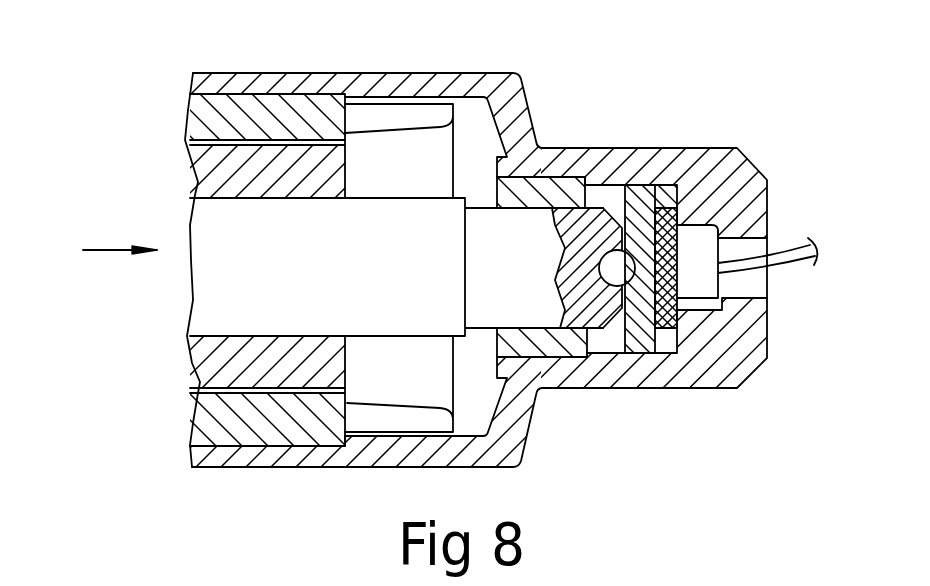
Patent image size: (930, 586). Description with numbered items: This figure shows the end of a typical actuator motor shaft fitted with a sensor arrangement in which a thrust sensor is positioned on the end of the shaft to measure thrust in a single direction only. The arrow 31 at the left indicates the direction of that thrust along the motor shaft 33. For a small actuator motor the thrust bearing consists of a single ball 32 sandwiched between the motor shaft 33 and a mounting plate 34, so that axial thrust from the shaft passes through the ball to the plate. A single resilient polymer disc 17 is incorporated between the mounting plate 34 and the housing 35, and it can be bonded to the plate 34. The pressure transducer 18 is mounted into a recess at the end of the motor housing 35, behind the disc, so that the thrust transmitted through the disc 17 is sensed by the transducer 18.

The resilient polymer disc 17 is at (655, 207).
The pressure transducer 18 is at (702, 245).
The actuating direction 31 is at (107, 248).
The ball 32 is at (613, 262).
The motor shaft 33 is at (492, 240).
The mounting plate 34 is at (637, 202).
The housing 35 is at (712, 167).